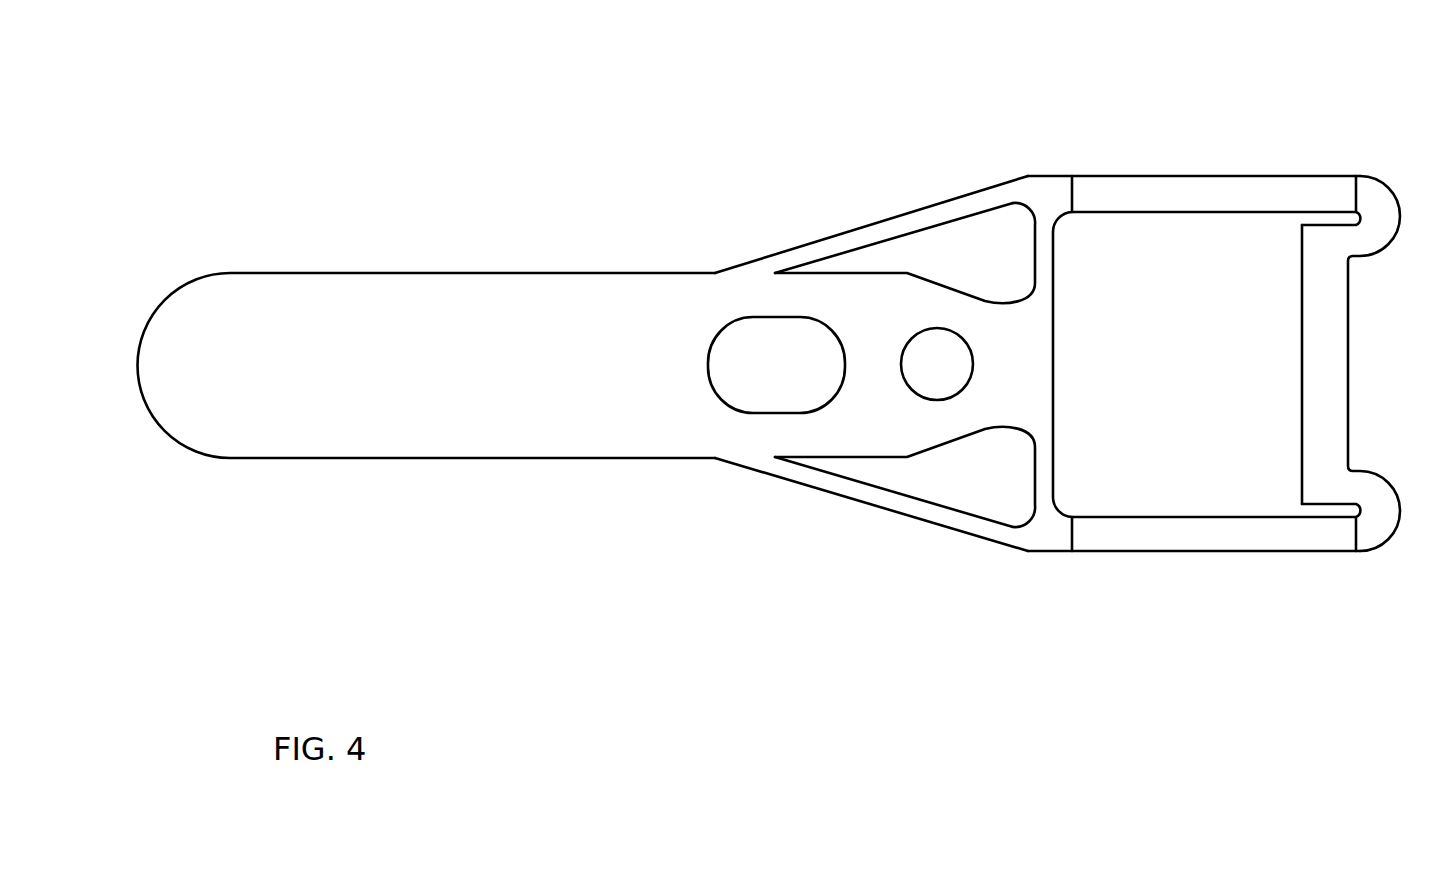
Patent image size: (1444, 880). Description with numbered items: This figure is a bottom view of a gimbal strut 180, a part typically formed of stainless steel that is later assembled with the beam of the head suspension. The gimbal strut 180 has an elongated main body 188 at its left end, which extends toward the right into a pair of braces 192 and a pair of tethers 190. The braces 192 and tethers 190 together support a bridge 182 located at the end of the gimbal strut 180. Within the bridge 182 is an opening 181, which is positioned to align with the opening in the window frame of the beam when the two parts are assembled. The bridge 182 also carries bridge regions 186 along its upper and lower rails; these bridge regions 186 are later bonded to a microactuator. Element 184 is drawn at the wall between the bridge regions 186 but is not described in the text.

The gimbal strut 180 is at (501, 62).
The opening 181 is at (1167, 382).
The bridge 182 is at (1404, 328).
The wall 184 is at (1332, 369).
The bridge regions 186 is at (1325, 249).
The main body 188 is at (453, 273).
The tethers 190 is at (1035, 250).
The braces 192 is at (893, 219).